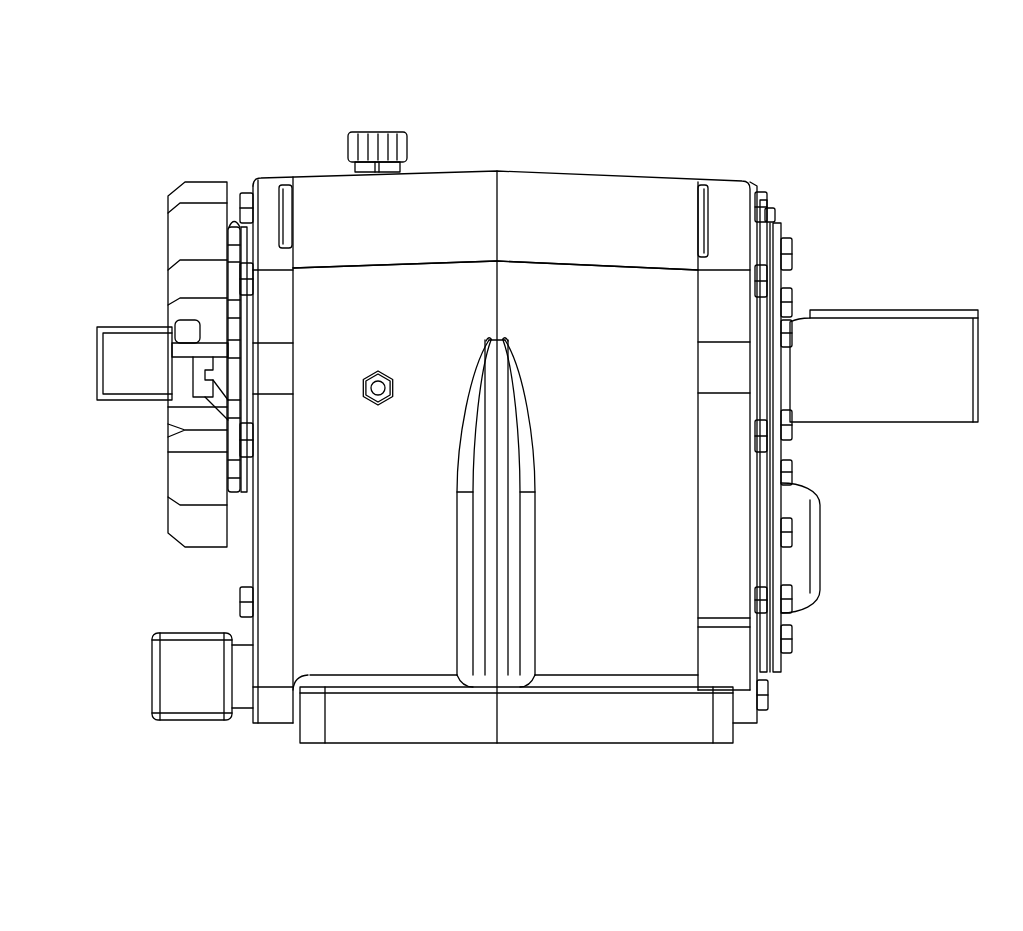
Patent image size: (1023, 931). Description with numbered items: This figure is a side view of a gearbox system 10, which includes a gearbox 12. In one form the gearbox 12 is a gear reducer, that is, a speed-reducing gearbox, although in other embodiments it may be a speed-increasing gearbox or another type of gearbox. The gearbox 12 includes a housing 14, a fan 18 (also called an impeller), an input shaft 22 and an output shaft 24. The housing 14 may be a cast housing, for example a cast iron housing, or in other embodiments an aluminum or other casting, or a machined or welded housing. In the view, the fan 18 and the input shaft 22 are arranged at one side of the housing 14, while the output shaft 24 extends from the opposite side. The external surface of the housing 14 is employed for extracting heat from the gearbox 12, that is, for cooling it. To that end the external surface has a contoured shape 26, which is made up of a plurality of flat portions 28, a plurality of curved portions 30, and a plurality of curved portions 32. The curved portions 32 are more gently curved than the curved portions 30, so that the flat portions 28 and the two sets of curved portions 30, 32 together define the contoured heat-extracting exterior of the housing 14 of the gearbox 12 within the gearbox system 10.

The gearbox system 10 is at (883, 114).
The gearbox 12 is at (748, 182).
The housing 14 is at (316, 174).
The fan 18 is at (168, 230).
The input shaft 22 is at (133, 390).
The output shaft 24 is at (915, 328).
The contoured shape 26 is at (656, 80).
The flat portions 28 is at (425, 173).
The curved portions 30 is at (412, 231).
The curved portions 32 is at (410, 469).